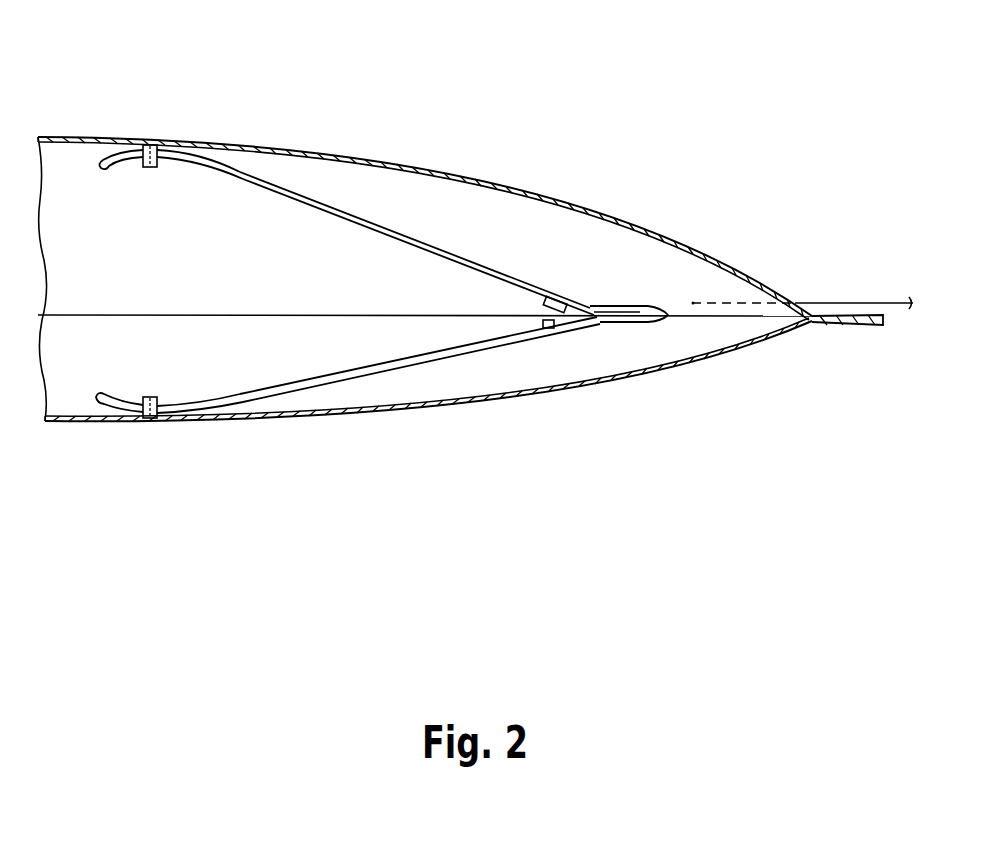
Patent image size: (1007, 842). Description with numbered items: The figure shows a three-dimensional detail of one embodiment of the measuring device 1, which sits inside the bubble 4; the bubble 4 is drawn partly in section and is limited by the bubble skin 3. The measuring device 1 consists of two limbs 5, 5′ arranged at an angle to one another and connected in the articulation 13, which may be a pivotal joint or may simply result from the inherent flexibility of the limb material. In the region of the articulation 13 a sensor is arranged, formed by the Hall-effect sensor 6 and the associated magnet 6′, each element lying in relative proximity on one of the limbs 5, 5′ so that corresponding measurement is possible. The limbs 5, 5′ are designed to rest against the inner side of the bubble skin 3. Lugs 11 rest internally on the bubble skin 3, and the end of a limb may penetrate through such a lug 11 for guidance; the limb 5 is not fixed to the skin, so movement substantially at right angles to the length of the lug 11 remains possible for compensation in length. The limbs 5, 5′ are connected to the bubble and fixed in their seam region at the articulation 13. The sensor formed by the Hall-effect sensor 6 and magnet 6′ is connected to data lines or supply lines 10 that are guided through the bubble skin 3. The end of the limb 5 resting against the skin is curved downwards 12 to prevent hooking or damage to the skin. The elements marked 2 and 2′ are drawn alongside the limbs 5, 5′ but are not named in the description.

The measuring device 1 is at (583, 270).
The upper web 2 is at (217, 163).
The lower web 2′ is at (223, 403).
The bubble skin 3 is at (397, 160).
The bubble 4 is at (198, 287).
The limb 5 is at (457, 258).
The limb 5′ is at (428, 360).
The Hall-effect sensor 6 is at (552, 292).
The magnet 6′ is at (552, 328).
The data lines or supply lines 10 is at (840, 306).
The lug 11 is at (147, 143).
The downward-curved limb end 12 is at (107, 157).
The articulation 13 is at (597, 317).